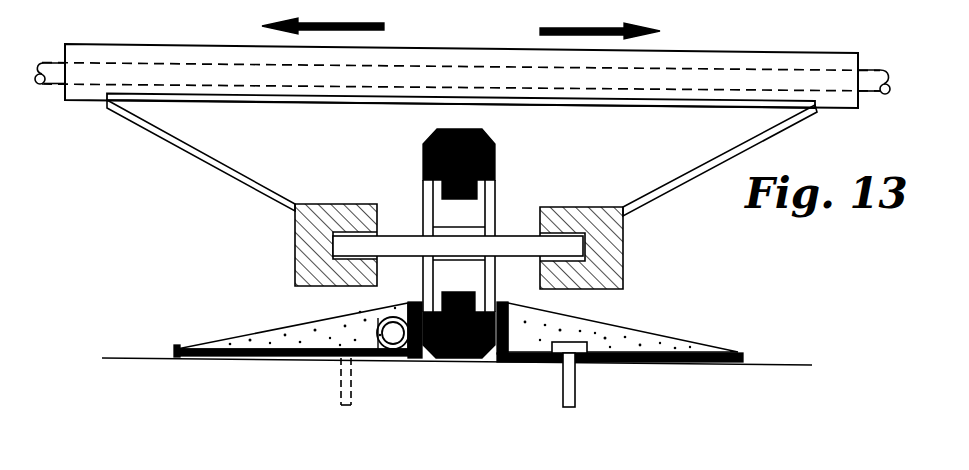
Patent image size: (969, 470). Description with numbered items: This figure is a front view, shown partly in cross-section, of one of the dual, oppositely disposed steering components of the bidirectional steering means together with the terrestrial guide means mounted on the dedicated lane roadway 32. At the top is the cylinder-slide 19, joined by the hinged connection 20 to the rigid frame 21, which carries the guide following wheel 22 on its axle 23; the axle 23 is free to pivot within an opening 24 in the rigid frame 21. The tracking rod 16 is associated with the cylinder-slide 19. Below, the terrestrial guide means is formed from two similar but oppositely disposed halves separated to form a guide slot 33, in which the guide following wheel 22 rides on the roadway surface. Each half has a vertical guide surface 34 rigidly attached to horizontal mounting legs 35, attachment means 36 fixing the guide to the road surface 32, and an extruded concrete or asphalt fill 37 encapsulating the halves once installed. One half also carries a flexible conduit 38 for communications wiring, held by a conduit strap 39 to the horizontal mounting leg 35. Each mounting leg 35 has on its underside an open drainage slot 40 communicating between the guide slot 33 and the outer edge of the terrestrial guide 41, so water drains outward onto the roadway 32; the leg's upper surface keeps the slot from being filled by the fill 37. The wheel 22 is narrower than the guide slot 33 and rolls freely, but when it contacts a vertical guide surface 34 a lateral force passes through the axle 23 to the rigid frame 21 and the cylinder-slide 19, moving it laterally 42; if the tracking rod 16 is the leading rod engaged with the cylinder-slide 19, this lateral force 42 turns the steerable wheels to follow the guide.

The tracking rod 16 is at (462, 53).
The cylinder-slide 19 is at (461, 59).
The hinged connection 20 is at (461, 120).
The rigid frame 21 is at (462, 158).
The guide following wheel 22 is at (426, 157).
The axle 23 is at (458, 214).
The opening 24 is at (459, 226).
The dedicated lane roadway 32 is at (463, 341).
The guide slot 33 is at (461, 346).
The vertical guide surface 34 is at (617, 319).
The horizontal mounting leg 35 is at (620, 332).
The attachment means 36 is at (589, 375).
The extruded concrete or asphalt fill 37 is at (292, 320).
The flexible conduit 38 is at (347, 327).
The conduit strap 39 is at (389, 358).
The drainage slot 40 is at (292, 377).
The outer edge of the terrestrial guide 41 is at (148, 334).
The lateral force 42 is at (374, 21).